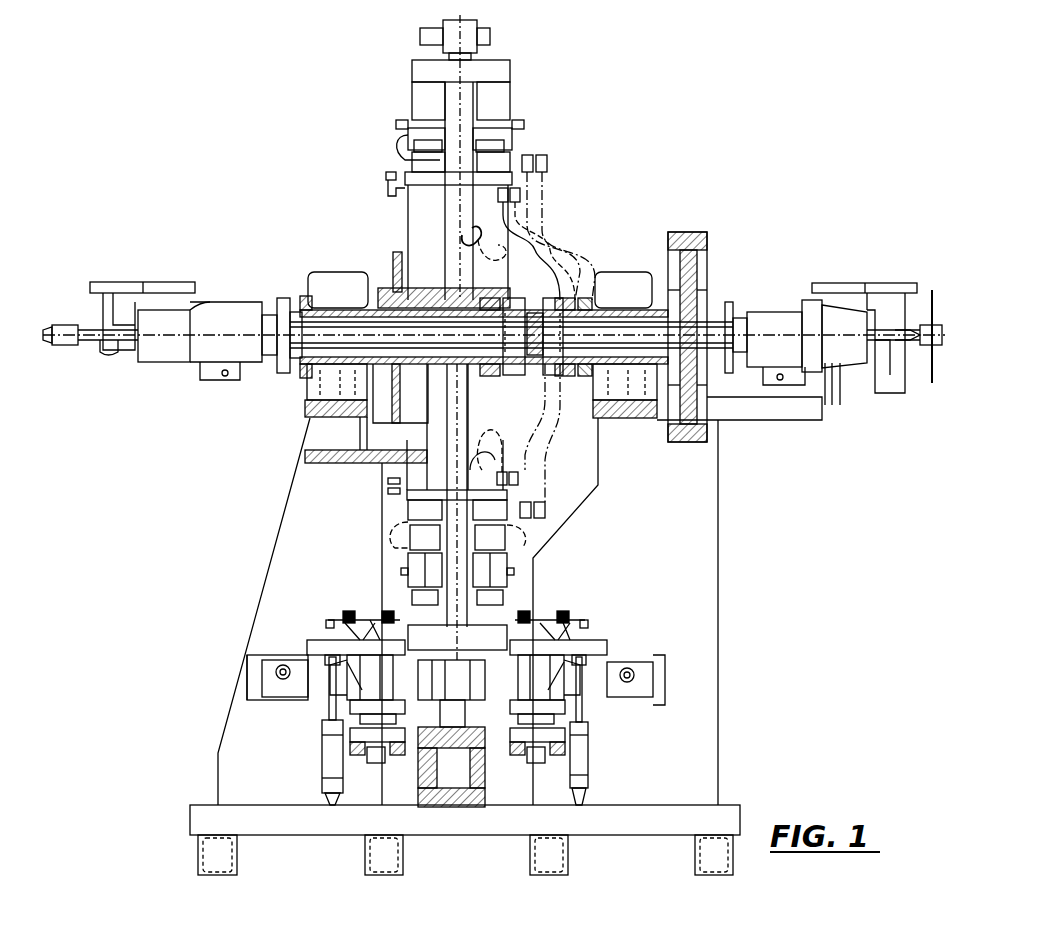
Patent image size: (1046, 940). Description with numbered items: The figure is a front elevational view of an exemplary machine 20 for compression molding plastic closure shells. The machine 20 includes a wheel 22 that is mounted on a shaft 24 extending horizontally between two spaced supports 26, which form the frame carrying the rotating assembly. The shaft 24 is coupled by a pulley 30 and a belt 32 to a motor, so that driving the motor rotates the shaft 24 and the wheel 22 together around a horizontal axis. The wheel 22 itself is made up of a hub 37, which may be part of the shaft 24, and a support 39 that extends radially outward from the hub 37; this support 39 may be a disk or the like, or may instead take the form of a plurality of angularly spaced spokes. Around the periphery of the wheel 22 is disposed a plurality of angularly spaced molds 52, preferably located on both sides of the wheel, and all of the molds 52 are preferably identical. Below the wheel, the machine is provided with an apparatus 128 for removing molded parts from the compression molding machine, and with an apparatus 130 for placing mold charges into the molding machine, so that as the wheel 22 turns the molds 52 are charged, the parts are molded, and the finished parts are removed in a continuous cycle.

The machine 20 is at (660, 162).
The wheel 22 is at (540, 90).
The shaft 24 is at (313, 357).
The supports 26 is at (300, 470).
The pulley 30 is at (690, 260).
The belt 32 is at (690, 232).
The hub 37 is at (430, 292).
The support 39 is at (430, 227).
The molds 52 is at (395, 146).
The apparatus for removing molded parts 128 is at (382, 598).
The apparatus for placement of mold charges 130 is at (348, 612).